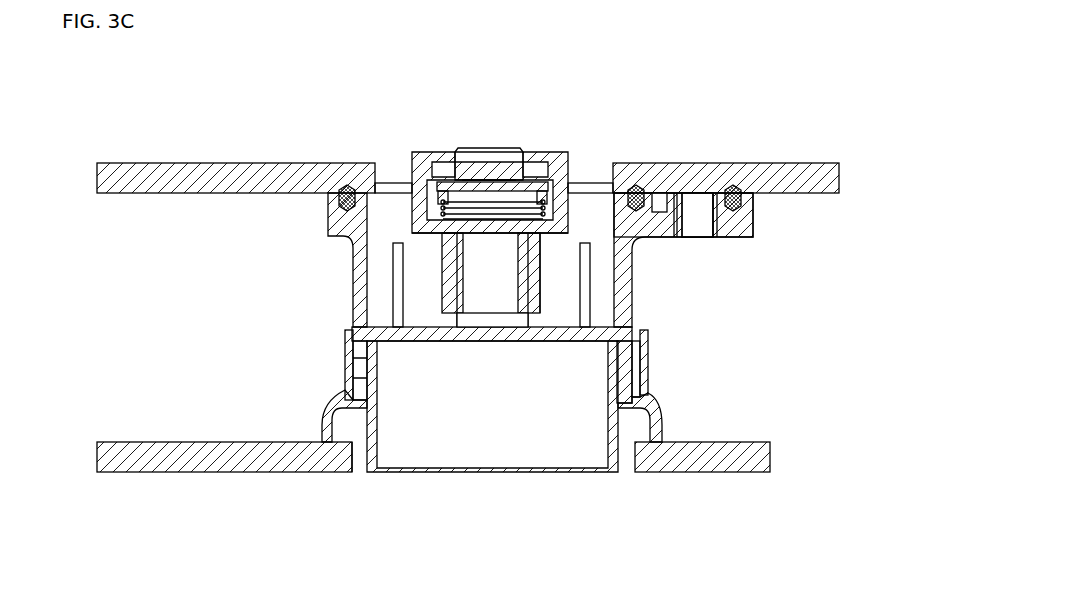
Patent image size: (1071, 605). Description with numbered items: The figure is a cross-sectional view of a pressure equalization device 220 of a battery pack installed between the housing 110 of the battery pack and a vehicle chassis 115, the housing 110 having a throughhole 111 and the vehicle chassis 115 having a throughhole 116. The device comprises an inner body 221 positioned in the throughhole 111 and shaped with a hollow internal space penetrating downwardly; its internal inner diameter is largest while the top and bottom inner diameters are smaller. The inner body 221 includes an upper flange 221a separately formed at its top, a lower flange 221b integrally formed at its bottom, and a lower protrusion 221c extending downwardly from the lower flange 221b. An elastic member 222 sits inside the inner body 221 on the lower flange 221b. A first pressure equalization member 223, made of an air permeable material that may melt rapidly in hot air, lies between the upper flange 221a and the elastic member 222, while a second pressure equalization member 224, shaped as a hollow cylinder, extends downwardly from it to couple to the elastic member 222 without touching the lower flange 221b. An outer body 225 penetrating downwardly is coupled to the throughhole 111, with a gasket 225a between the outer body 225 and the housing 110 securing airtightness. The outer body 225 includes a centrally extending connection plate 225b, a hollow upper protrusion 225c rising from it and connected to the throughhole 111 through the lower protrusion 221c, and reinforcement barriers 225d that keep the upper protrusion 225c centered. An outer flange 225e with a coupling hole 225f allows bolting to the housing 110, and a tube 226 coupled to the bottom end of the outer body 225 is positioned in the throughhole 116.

The housing 110 is at (808, 168).
The throughhole 111 is at (606, 167).
The vehicle chassis 115 is at (185, 464).
The throughhole 116 is at (352, 458).
The pressure equalization device 220 is at (480, 193).
The inner body 221 is at (569, 160).
The upper flange 221a is at (437, 160).
The lower flange 221b is at (433, 237).
The lower protrusion 221c is at (464, 240).
The elastic member 222 is at (530, 182).
The first pressure equalization member 223 is at (490, 182).
The second pressure equalization member 224 is at (540, 202).
The outer body 225 is at (623, 290).
The gasket 225a is at (340, 184).
The connection plate 225b is at (575, 343).
The upper protrusion 225c is at (542, 305).
The reinforcement barriers 225d is at (415, 315).
The outer flange 225e is at (743, 218).
The coupling hole 225f is at (698, 230).
The tube 226 is at (655, 408).